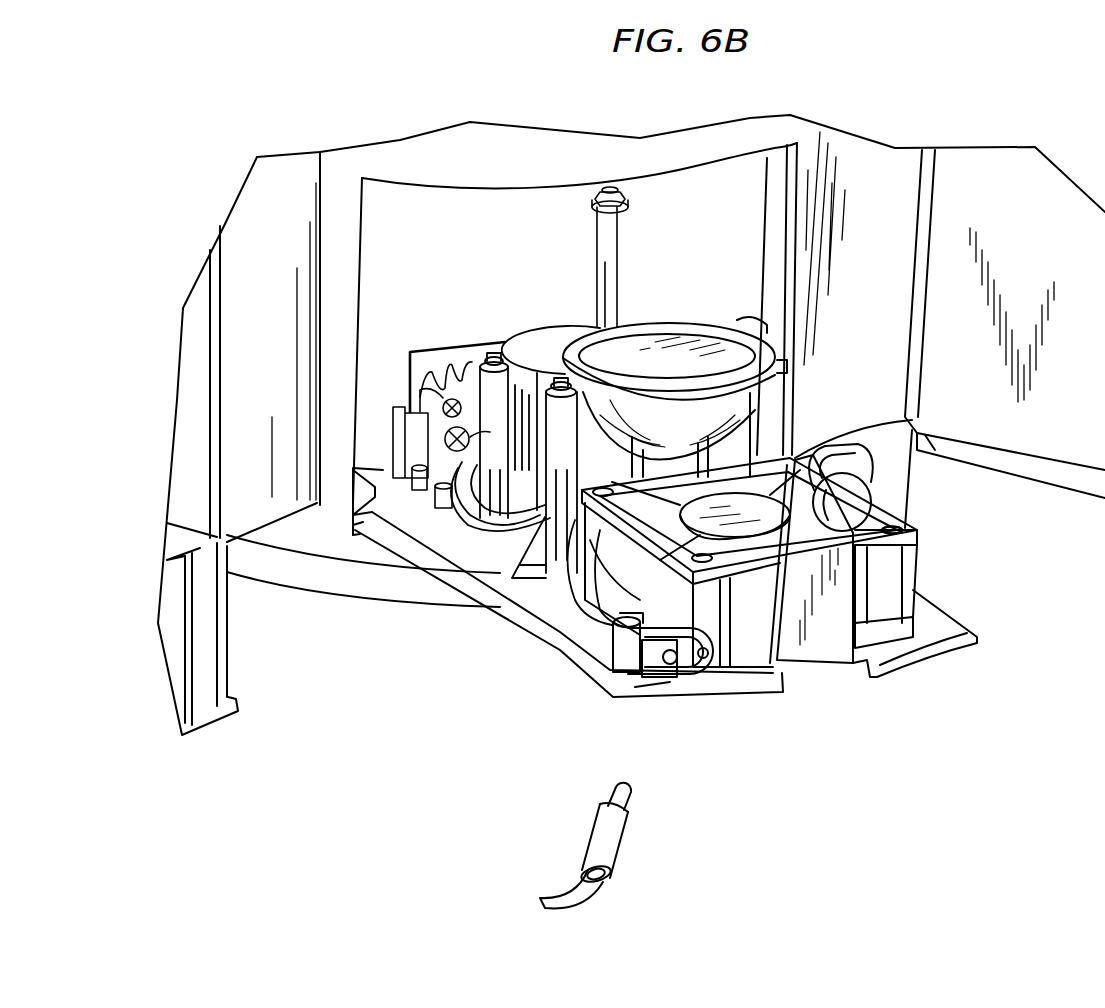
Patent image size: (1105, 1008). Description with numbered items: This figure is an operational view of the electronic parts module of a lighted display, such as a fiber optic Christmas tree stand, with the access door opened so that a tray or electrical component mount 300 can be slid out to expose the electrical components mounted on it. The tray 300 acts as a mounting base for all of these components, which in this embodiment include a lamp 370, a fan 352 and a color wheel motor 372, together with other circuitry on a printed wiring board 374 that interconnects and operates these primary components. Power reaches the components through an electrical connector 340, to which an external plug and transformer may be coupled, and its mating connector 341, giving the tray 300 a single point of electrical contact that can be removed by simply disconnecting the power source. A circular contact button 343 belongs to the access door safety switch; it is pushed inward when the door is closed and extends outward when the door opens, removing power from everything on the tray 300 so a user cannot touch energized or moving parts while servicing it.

The tray or electrical component mount 300 is at (542, 600).
The electrical connector 340 is at (660, 670).
The connector 341 is at (630, 827).
The circular contact button 343 is at (845, 490).
The fan 352 is at (743, 513).
The lamp 370 is at (670, 338).
The color wheel motor 372 is at (543, 340).
The printed wiring board 374 is at (410, 397).